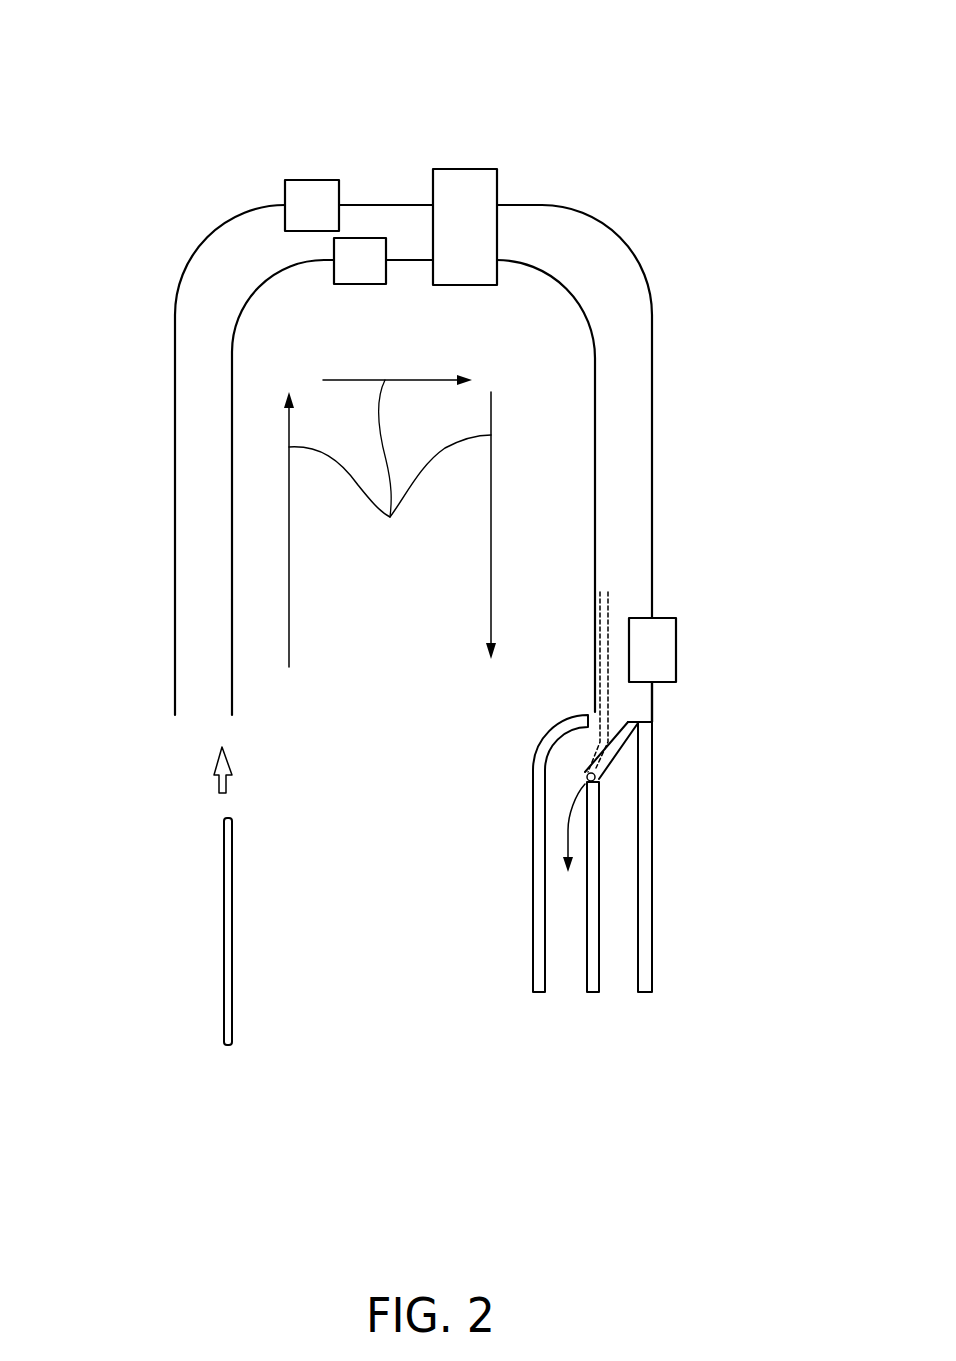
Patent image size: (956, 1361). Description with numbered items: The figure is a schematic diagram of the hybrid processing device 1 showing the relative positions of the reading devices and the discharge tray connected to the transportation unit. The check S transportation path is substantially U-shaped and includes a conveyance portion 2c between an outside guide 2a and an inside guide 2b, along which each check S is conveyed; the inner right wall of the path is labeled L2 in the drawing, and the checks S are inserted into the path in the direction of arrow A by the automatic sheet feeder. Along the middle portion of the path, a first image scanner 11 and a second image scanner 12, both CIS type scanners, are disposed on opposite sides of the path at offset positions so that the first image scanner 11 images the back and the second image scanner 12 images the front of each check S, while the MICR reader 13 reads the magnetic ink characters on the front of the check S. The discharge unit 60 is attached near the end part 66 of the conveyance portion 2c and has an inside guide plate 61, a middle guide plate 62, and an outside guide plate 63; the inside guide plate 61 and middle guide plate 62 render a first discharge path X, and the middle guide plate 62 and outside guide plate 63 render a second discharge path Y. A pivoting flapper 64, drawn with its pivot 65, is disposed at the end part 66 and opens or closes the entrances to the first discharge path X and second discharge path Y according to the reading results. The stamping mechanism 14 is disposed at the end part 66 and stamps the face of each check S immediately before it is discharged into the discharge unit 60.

The hybrid processing device 1 is at (404, 114).
The outside guide 2a is at (176, 540).
The inside guide 2b is at (232, 698).
The conveyance portion 2c is at (200, 603).
The transportation path inner guide L2 is at (603, 403).
The first image scanner 11 is at (311, 180).
The second image scanner 12 is at (360, 284).
The MICR reader 13 is at (473, 169).
The stamping mechanism 14 is at (676, 640).
The discharge unit 60 is at (698, 899).
The inside guide plate 61 is at (541, 876).
The middle guide plate 62 is at (595, 937).
The outside guide plate 63 is at (647, 862).
The flapper 64 is at (615, 747).
The pivot shaft 65 is at (583, 775).
The end part 66 is at (640, 710).
The check S is at (232, 915).
The direction of arrow A is at (234, 772).
The first discharge path X is at (563, 978).
The second discharge path Y is at (618, 983).